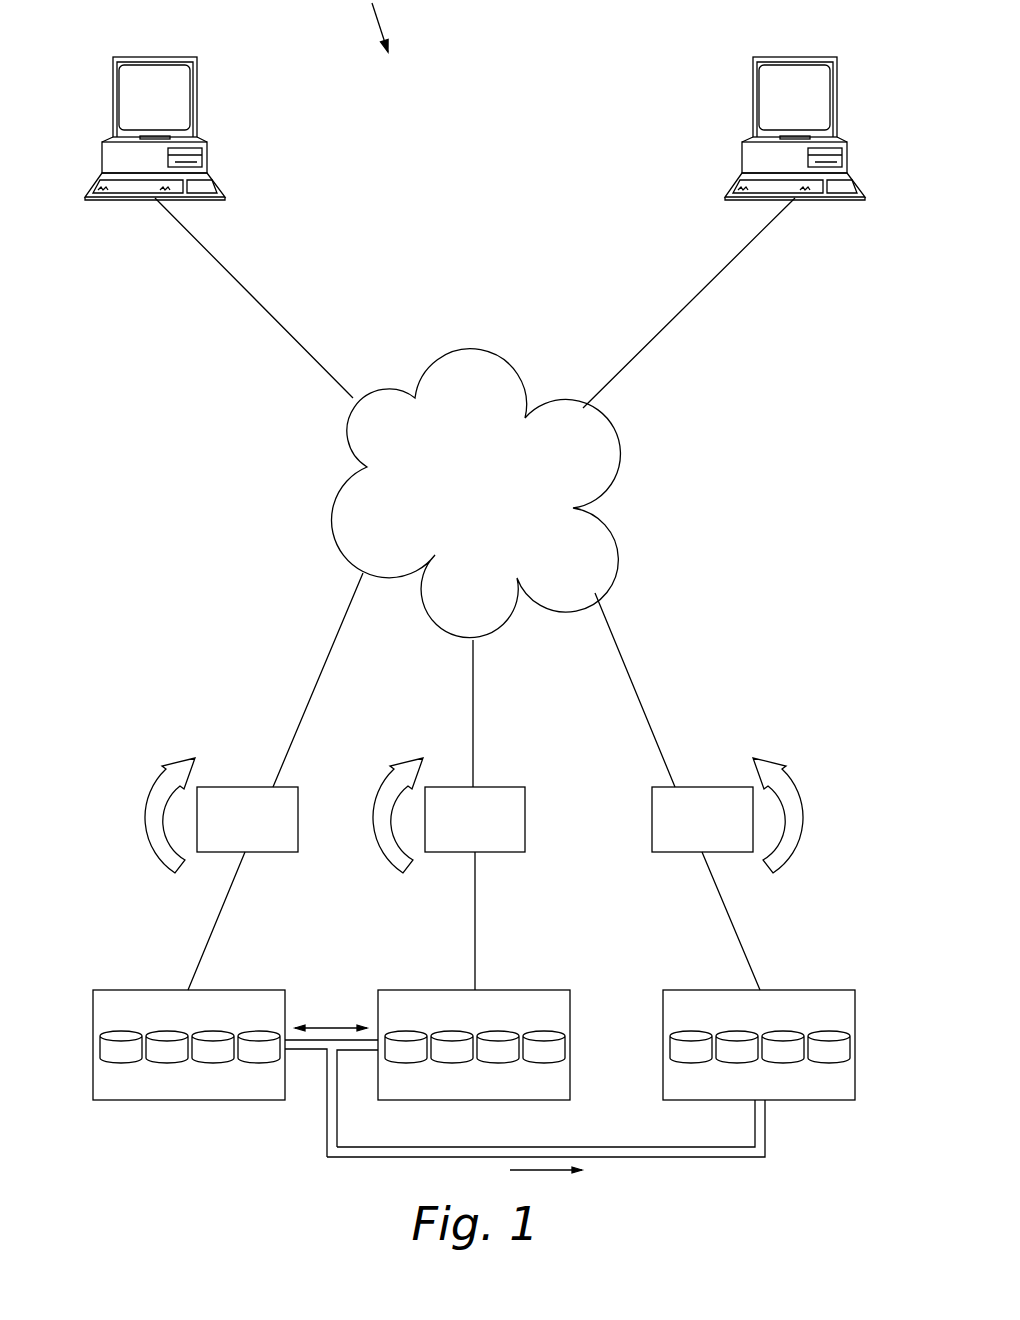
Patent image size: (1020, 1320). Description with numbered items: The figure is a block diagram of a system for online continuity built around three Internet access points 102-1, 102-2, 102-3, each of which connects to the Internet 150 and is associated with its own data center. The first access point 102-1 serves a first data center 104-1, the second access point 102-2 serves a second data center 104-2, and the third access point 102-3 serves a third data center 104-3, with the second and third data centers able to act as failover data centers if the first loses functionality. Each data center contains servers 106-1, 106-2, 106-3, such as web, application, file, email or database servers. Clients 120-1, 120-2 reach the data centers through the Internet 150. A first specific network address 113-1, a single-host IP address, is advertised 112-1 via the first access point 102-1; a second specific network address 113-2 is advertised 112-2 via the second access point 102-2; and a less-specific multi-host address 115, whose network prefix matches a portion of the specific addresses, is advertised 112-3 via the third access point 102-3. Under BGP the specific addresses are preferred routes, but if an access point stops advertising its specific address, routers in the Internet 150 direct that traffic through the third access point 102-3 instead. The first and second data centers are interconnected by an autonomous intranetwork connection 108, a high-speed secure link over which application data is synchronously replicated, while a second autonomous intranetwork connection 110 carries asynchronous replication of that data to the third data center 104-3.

The client 120-1 is at (156, 57).
The client 120-2 is at (796, 57).
The Internet 150 is at (468, 348).
The first access point 102-1 is at (250, 787).
The second access point 102-2 is at (504, 787).
The third access point 102-3 is at (702, 788).
The advertisement of first specific network address 112-1 is at (143, 817).
The advertisement of second specific network address 112-2 is at (370, 818).
The advertisement of less-specific address 112-3 is at (807, 818).
The first specific network address 113-1 is at (179, 724).
The second specific network address 113-2 is at (407, 724).
The less-specific network address 115 is at (815, 695).
The first data center 104-1 is at (242, 990).
The second data center 104-2 is at (527, 990).
The third data center 104-3 is at (812, 990).
The servers 106-1 is at (150, 1015).
The servers 106-2 is at (436, 1015).
The servers 106-3 is at (722, 1015).
The autonomous intranetwork connection 108 is at (310, 1052).
The second autonomous intranetwork connection 110 is at (548, 1145).